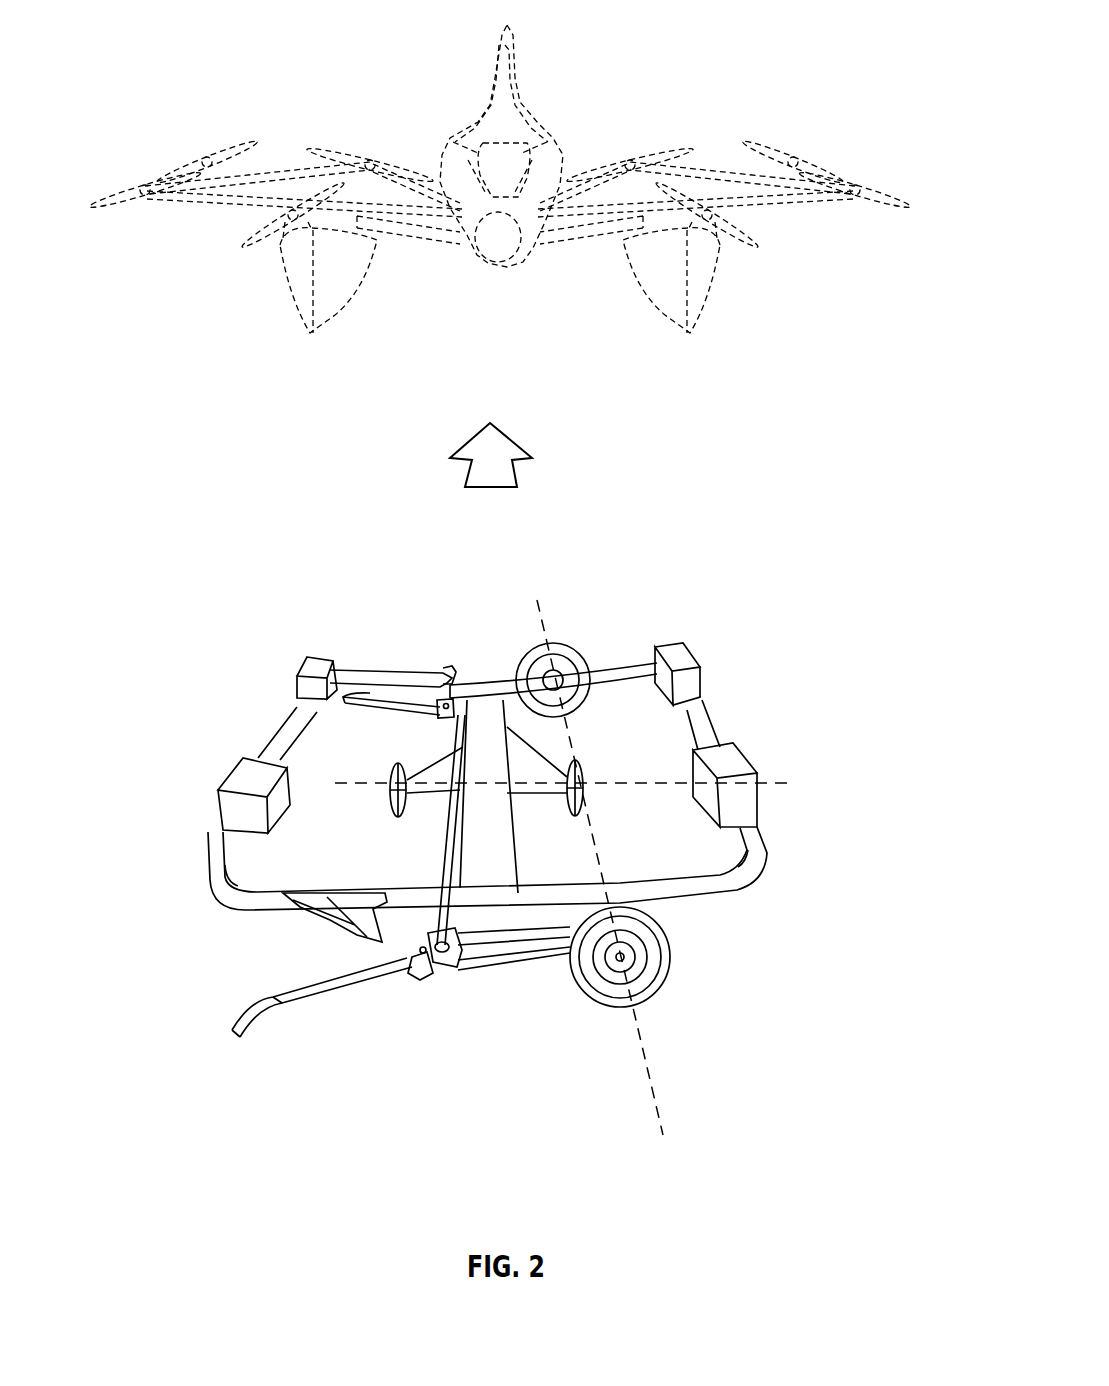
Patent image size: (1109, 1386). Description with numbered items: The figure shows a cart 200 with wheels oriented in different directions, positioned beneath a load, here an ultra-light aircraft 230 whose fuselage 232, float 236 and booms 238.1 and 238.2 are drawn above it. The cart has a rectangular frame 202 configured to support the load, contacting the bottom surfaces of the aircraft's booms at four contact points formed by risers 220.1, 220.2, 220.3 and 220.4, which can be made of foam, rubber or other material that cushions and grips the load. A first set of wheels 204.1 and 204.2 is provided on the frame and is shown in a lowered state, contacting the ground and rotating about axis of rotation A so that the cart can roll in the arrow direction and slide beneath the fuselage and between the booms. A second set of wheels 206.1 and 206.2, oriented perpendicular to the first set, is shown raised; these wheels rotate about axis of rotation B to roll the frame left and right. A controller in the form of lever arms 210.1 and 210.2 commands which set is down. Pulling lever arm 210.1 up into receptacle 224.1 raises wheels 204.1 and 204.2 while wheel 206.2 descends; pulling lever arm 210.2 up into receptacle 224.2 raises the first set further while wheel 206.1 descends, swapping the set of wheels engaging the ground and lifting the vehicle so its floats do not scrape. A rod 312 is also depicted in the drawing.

The Cart (slides under the load) 200 is at (646, 459).
The frame 202 is at (697, 897).
The first set of wheels 204.1 is at (392, 766).
The first set of wheels 204.2 is at (586, 770).
The second set of wheels 206.1 is at (565, 650).
The second set of wheels 206.2 is at (662, 985).
The lever arm 210.1 is at (302, 1003).
The lever arm 210.2 is at (438, 672).
The riser 220.1 is at (300, 672).
The riser 220.2 is at (238, 768).
The riser 220.3 is at (690, 655).
The riser 220.4 is at (760, 800).
The receptacle 224.1 is at (332, 940).
The receptacle 224.2 is at (442, 665).
The aircraft 230 is at (643, 82).
The fuselage 232 is at (549, 118).
The float 236 is at (290, 297).
The boom 238.1 is at (405, 238).
The boom 238.2 is at (393, 192).
The Rod 312 is at (438, 868).